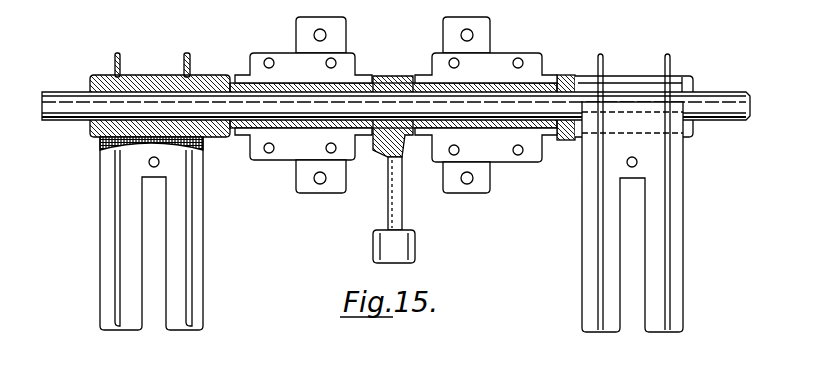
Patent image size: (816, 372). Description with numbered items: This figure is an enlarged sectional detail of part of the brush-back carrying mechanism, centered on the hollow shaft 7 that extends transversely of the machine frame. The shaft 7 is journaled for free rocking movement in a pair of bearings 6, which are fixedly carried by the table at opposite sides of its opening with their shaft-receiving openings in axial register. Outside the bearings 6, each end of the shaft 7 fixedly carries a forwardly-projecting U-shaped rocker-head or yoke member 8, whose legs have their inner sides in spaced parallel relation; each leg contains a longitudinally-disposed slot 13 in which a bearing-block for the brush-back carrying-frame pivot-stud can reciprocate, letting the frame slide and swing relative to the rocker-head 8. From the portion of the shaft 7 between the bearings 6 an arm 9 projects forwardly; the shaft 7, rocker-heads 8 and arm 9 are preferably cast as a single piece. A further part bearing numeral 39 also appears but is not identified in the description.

The shaft 39 is at (83, 108).
The bearings 6 is at (270, 60).
The hollow shaft 7 is at (293, 123).
The rocker-head or yoke member 8 is at (110, 190).
The arm 9 is at (403, 202).
The slot 13 is at (392, 253).